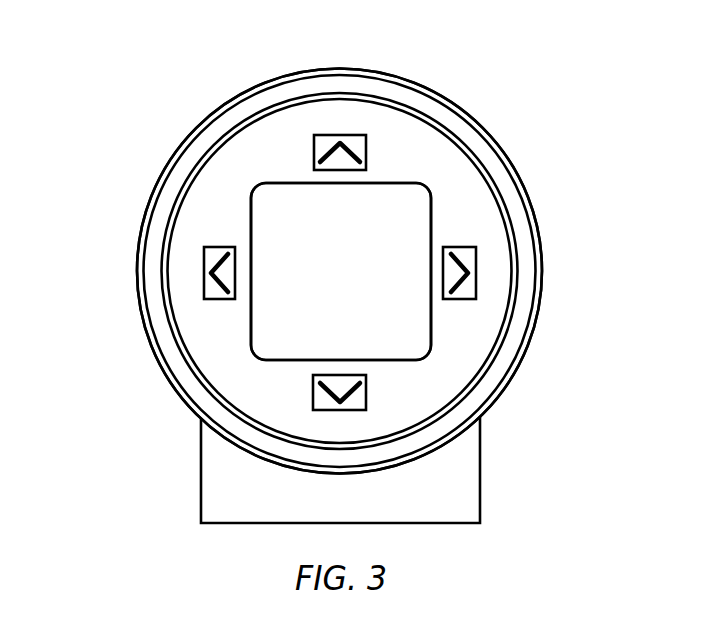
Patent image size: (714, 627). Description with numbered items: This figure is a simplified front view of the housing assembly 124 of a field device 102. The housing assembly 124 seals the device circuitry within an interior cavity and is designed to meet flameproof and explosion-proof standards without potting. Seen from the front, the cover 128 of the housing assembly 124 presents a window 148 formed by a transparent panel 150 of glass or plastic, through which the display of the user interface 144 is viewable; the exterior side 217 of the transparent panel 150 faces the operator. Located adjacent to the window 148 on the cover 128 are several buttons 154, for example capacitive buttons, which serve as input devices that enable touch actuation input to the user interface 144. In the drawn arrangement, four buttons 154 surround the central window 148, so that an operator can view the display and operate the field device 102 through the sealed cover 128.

The field device 102 is at (113, 54).
The housing assembly 124 is at (523, 406).
The cover 128 is at (174, 163).
The user interface 144 is at (200, 215).
The window 148 is at (452, 203).
The transparent panel 150 is at (405, 208).
The buttons 154 is at (320, 140).
The exterior side 217 is at (270, 342).